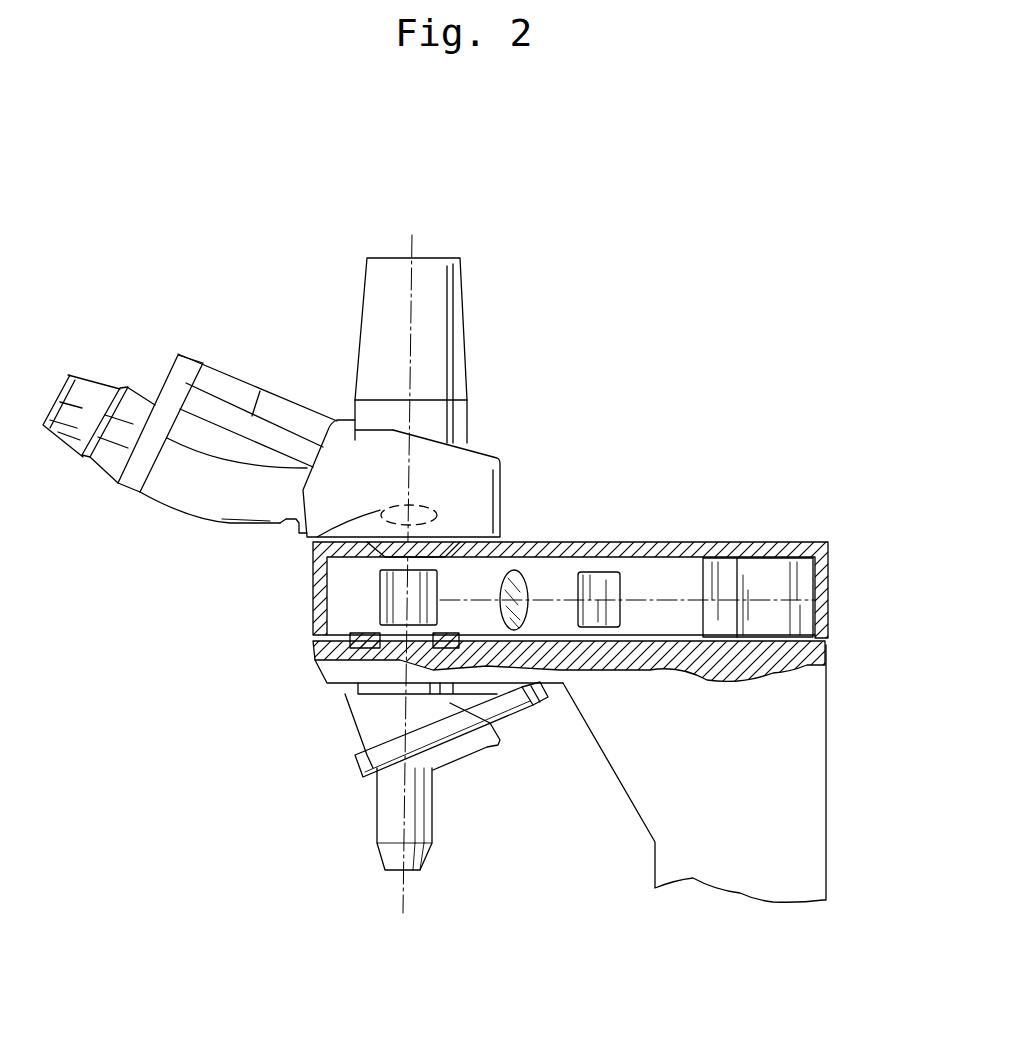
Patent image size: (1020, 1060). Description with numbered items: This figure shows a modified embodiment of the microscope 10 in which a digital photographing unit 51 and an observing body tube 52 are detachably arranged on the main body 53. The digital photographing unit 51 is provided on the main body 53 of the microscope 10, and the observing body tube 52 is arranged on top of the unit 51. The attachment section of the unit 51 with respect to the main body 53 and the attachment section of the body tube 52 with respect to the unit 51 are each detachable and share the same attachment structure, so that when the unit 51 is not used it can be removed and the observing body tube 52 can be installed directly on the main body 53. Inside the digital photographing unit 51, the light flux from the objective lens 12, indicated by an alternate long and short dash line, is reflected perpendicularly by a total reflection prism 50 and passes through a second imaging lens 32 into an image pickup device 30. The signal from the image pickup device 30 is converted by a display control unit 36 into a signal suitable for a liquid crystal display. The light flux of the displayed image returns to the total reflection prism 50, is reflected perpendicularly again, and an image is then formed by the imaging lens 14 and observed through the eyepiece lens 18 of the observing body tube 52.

The microscope 10 is at (732, 347).
The objective lens 12 is at (382, 823).
The imaging lens 14 is at (383, 510).
The eyepiece lens 18 is at (105, 390).
The image pickup device 30 is at (603, 573).
The second imaging lens 32 is at (519, 572).
The display control unit 36 is at (752, 573).
The total reflection prism 50 is at (382, 598).
The digital photographing unit 51 is at (823, 540).
The observing body tube 52 is at (435, 468).
The main body 53 is at (810, 772).